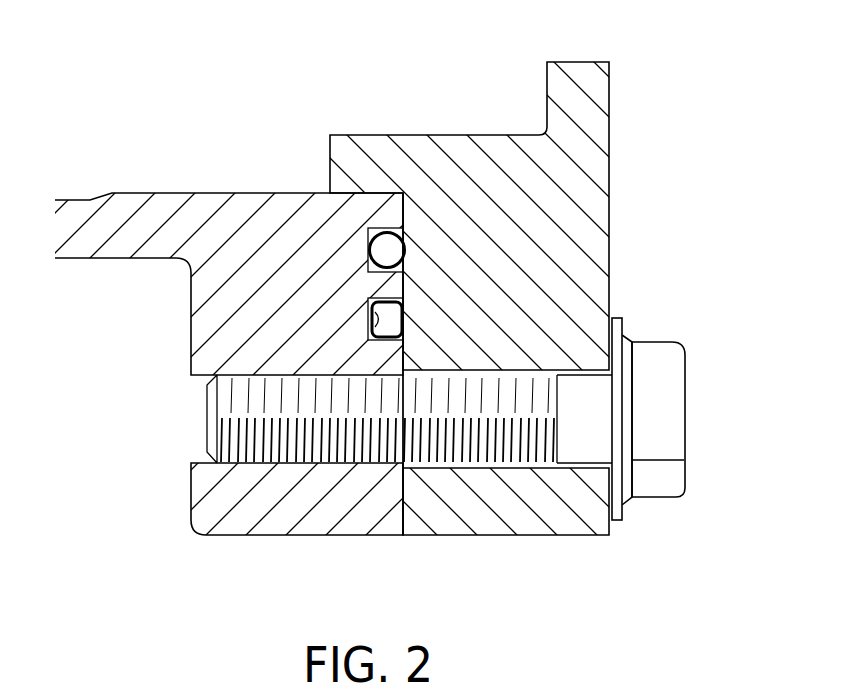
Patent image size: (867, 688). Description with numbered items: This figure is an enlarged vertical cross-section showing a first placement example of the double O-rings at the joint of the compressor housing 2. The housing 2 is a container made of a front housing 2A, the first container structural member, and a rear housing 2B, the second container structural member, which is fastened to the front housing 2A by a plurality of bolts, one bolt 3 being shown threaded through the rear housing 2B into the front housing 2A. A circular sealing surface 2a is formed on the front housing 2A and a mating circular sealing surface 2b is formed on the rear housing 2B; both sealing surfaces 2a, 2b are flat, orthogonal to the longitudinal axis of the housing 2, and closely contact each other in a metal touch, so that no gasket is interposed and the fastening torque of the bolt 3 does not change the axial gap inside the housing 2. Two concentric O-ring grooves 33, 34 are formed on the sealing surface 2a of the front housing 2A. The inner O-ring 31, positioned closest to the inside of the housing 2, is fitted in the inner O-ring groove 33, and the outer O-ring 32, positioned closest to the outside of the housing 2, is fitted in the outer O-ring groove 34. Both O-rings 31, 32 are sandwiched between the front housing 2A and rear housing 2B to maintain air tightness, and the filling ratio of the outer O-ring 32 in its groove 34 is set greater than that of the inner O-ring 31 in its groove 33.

The housing 2 is at (413, 50).
The front housing 2A is at (280, 193).
The rear housing 2B is at (381, 135).
The sealing surface 2a is at (406, 518).
The sealing surface 2b is at (402, 490).
The bolt 3 is at (687, 402).
The O-ring 31 is at (398, 251).
The O-ring 32 is at (398, 318).
The O-ring groove 33 is at (392, 250).
The O-ring groove 34 is at (392, 318).